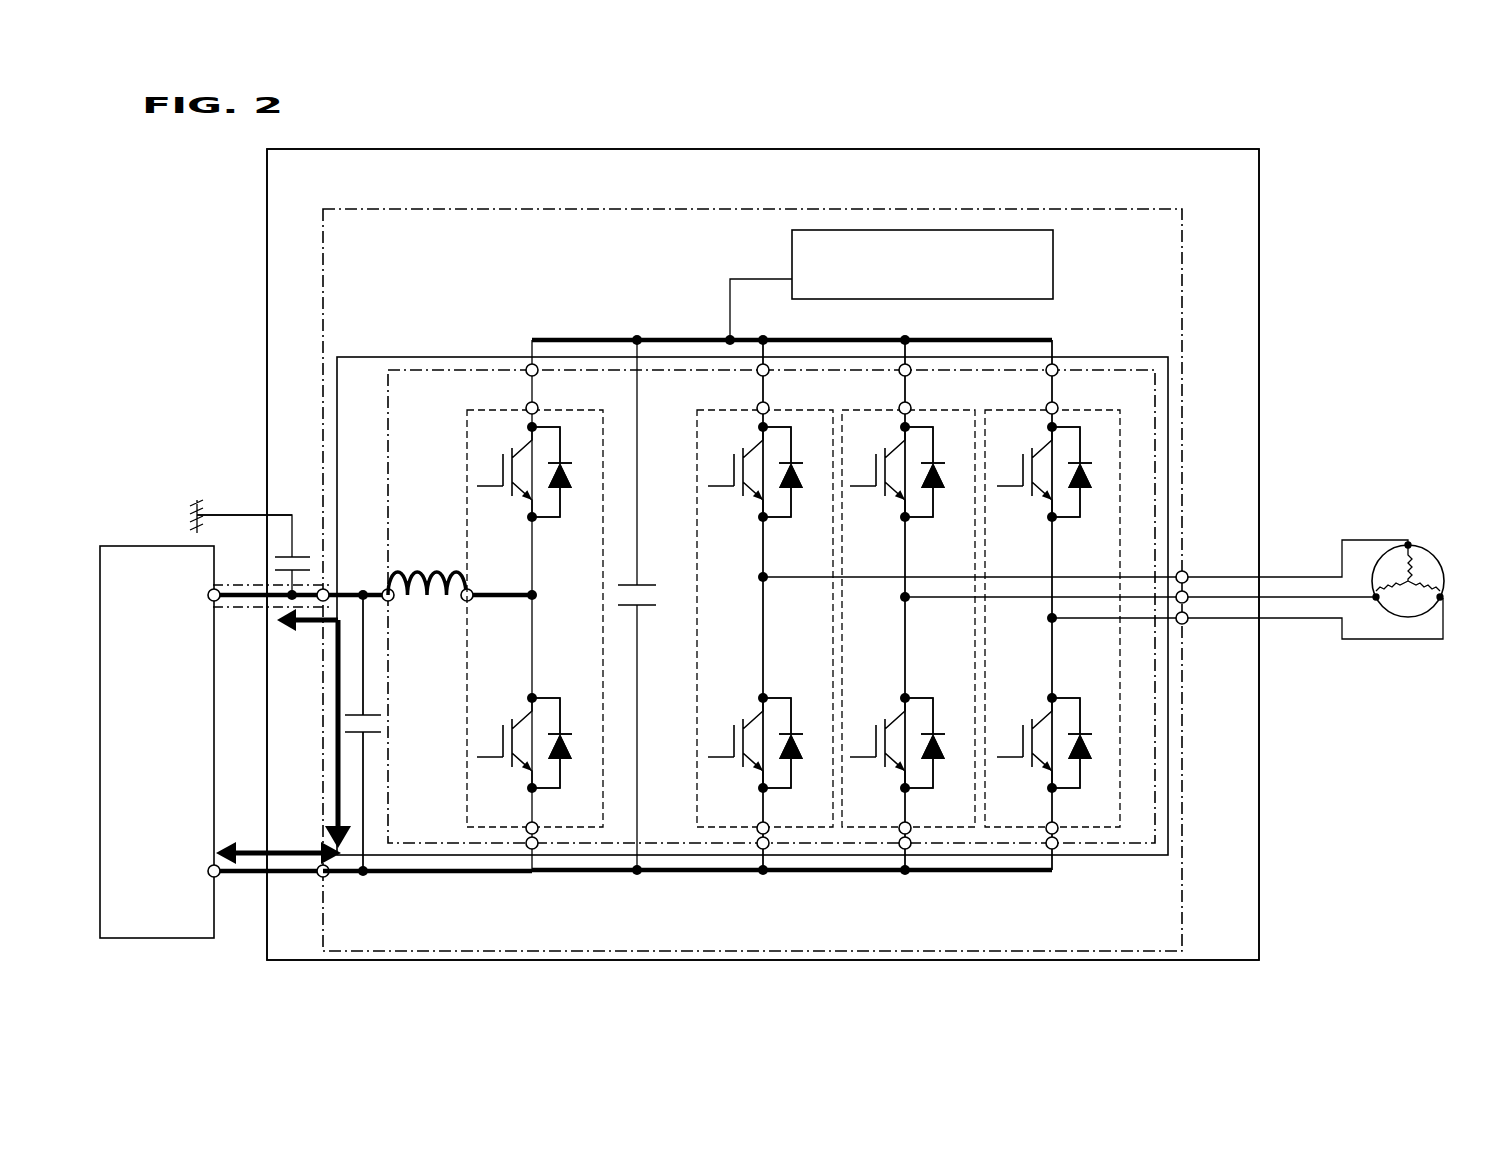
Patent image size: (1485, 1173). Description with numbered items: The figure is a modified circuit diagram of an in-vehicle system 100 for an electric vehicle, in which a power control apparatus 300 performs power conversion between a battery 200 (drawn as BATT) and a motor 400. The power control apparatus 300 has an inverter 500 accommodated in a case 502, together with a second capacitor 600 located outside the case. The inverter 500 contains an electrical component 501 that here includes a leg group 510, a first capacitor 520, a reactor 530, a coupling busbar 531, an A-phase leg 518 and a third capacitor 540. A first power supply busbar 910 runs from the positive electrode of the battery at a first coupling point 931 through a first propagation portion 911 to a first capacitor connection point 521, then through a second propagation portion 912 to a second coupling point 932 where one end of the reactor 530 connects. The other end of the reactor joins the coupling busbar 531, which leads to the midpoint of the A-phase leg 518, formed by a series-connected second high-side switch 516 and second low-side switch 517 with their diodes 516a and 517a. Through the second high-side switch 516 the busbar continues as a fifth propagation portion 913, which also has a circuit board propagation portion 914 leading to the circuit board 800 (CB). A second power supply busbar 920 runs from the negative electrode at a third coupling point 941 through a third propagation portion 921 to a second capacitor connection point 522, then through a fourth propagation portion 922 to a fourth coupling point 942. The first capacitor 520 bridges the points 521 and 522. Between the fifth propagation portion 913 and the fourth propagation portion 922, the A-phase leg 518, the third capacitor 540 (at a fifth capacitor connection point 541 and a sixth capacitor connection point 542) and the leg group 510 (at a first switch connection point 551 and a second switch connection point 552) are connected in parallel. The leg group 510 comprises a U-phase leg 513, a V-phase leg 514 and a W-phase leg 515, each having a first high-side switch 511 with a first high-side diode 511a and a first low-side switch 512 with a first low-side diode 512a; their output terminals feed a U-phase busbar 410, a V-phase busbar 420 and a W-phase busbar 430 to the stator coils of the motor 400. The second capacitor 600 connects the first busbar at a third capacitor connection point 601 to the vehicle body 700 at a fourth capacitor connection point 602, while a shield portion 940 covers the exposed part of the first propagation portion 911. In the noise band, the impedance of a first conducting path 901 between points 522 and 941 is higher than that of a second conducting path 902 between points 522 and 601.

The in-vehicle system 100 is at (1368, 185).
The battery 200 is at (150, 546).
The power control apparatus 300 is at (1263, 222).
The motor 400 is at (1448, 553).
The U-phase busbar 410 is at (1267, 580).
The V-phase busbar 420 is at (1312, 600).
The W-phase busbar 430 is at (1381, 640).
The inverter 500 is at (1168, 468).
The electrical component 501 is at (1163, 397).
The case 502 is at (1183, 310).
The leg group 510 is at (1128, 410).
The first high-side switch 511 is at (734, 463).
The first high-side diode 511a is at (797, 500).
The first low-side switch 512 is at (734, 727).
The first low-side diode 512a is at (797, 770).
The U-phase leg 513 is at (775, 412).
The V-phase leg 514 is at (918, 412).
The W-phase leg 515 is at (1062, 412).
The second high-side switch 516 is at (503, 463).
The converter upper diode 516a is at (566, 500).
The second low-side switch 517 is at (503, 727).
The converter lower diode 517a is at (566, 770).
The A-phase leg 518 is at (548, 410).
The first capacitor 520 is at (382, 715).
The first capacitor connection point 521 is at (363, 594).
The second capacitor connection point 522 is at (366, 874).
The reactor 530 is at (420, 552).
The coupling busbar 531 is at (493, 592).
The third capacitor 540 is at (640, 584).
The fifth capacitor connection point 541 is at (638, 338).
The sixth capacitor connection point 542 is at (640, 873).
The first switch connection point 551 is at (756, 404).
The second switch connection point 552 is at (766, 836).
The second capacitor 600 is at (292, 552).
The third capacitor connection point 601 is at (284, 606).
The fourth capacitor connection point 602 is at (232, 500).
The vehicle body 700 is at (197, 498).
The circuit board 800 is at (1053, 245).
The first conducting path 901 is at (283, 852).
The second conducting path 902 is at (335, 698).
The first power supply busbar 910 is at (282, 604).
The first propagation portion 911 is at (345, 602).
The second propagation portion 912 is at (372, 602).
The fifth propagation portion 913 is at (540, 338).
The circuit board propagation portion 914 is at (748, 266).
The second power supply busbar 920 is at (283, 880).
The third propagation portion 921 is at (330, 877).
The fourth propagation portion 922 is at (427, 893).
The first coupling point 931 is at (218, 603).
The second coupling point 932 is at (390, 588).
The shield portion 940 is at (272, 577).
The third coupling point 941 is at (216, 878).
The fourth coupling point 942 is at (538, 850).